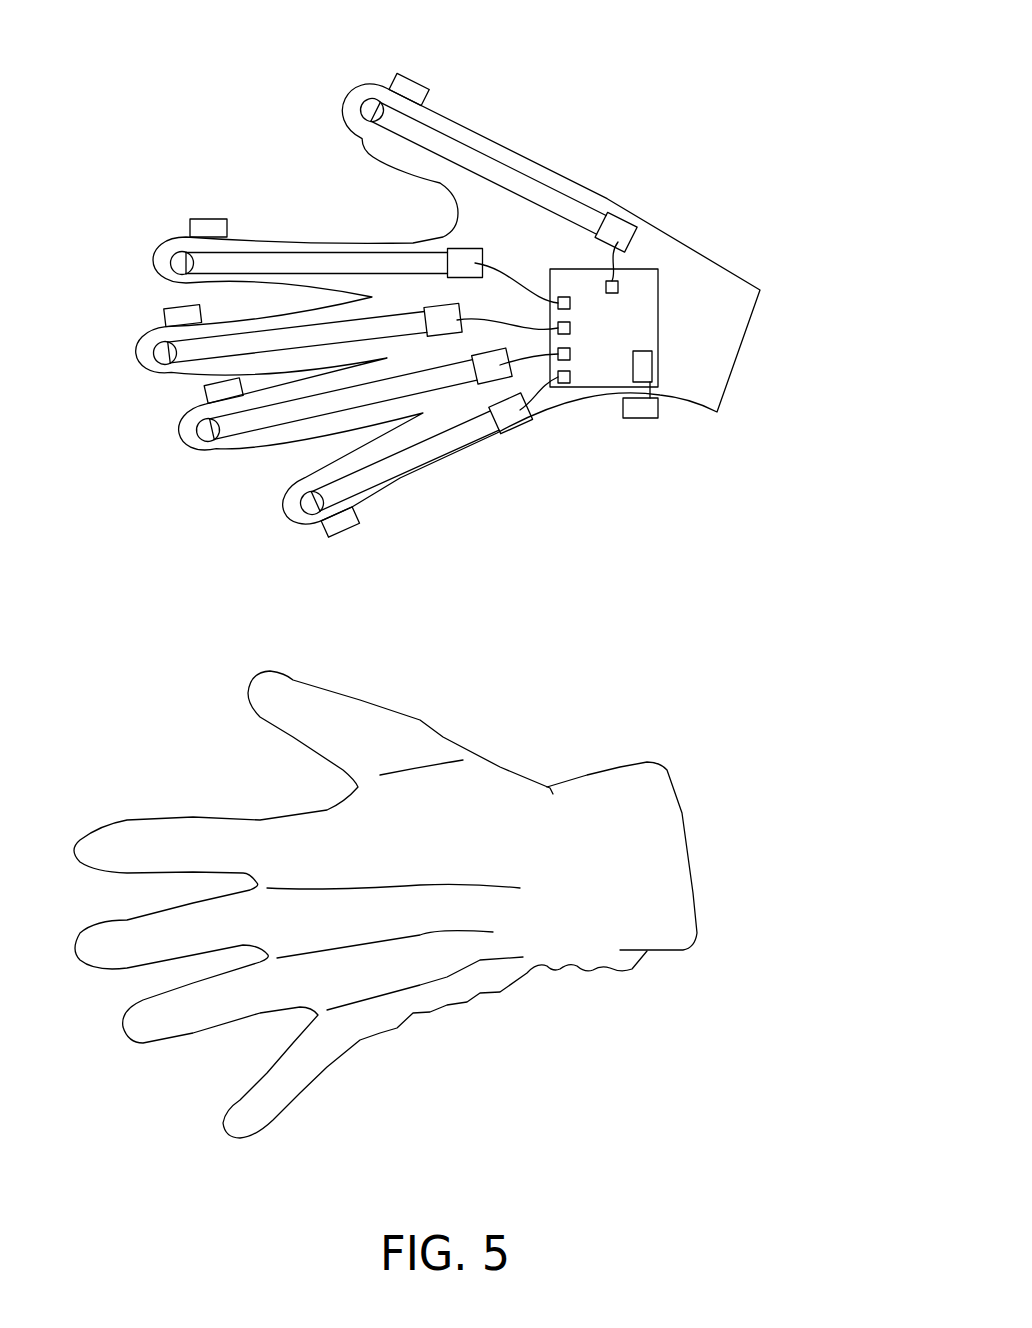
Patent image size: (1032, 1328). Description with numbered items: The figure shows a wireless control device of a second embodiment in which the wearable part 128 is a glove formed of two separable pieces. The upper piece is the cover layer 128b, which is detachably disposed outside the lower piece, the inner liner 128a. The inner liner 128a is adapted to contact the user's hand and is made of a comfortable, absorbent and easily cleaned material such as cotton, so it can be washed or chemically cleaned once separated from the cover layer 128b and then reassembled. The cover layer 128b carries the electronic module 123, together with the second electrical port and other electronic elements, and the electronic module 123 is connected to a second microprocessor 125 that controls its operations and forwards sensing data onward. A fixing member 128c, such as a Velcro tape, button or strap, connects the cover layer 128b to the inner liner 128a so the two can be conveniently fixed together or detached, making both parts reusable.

The electronic module 123 is at (513, 76).
The second microprocessor 125 is at (647, 367).
The wearable part 128 is at (800, 817).
The inner liner 128a is at (682, 813).
The cover layer 128b is at (710, 283).
The fixing member 128c is at (642, 418).